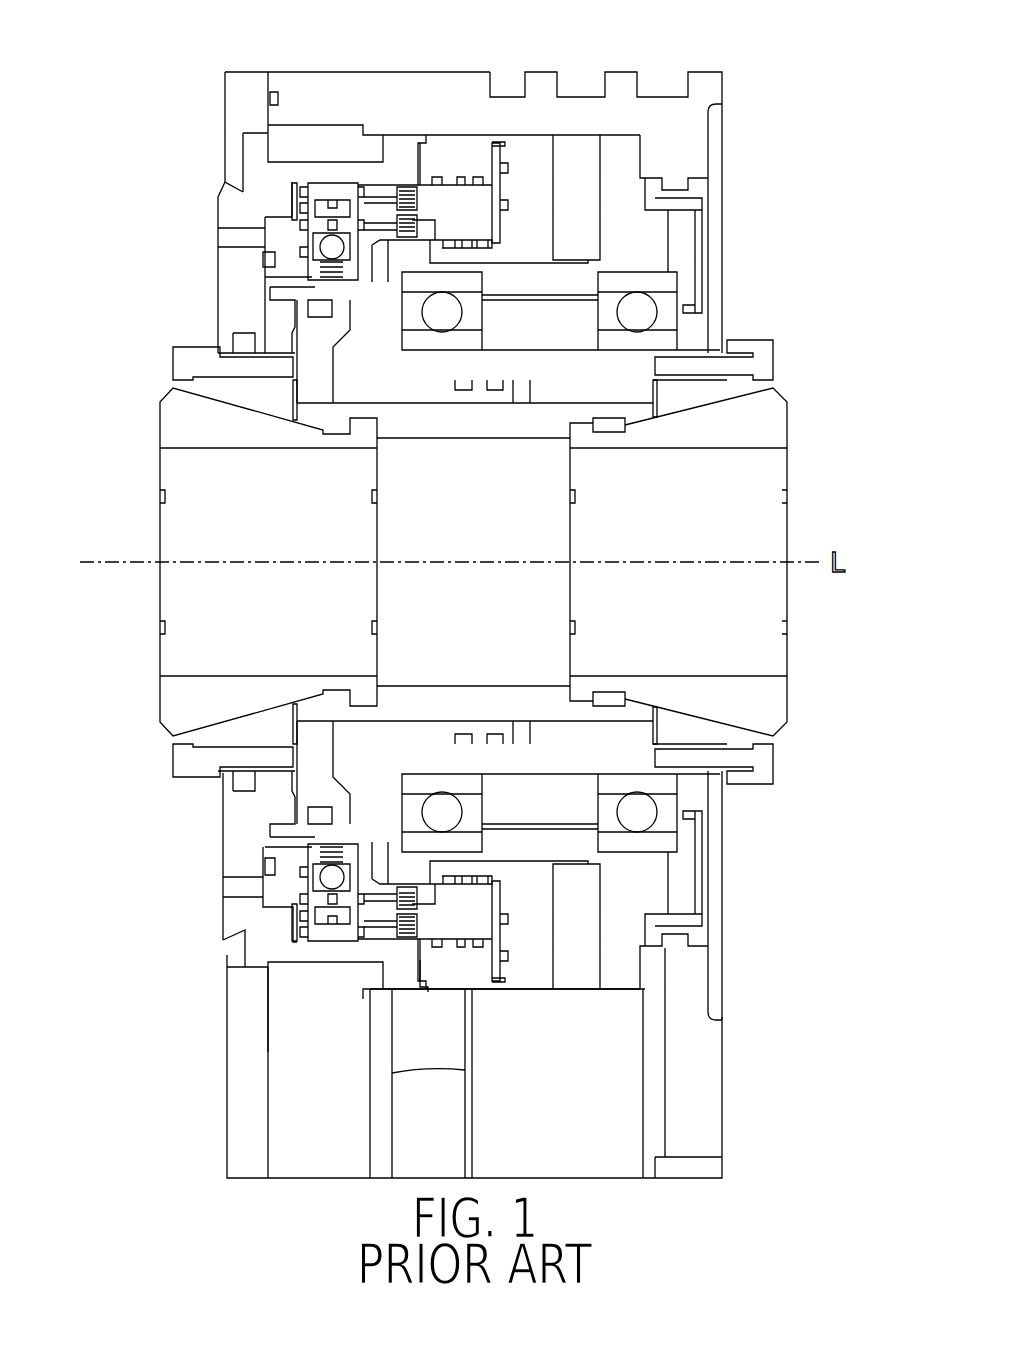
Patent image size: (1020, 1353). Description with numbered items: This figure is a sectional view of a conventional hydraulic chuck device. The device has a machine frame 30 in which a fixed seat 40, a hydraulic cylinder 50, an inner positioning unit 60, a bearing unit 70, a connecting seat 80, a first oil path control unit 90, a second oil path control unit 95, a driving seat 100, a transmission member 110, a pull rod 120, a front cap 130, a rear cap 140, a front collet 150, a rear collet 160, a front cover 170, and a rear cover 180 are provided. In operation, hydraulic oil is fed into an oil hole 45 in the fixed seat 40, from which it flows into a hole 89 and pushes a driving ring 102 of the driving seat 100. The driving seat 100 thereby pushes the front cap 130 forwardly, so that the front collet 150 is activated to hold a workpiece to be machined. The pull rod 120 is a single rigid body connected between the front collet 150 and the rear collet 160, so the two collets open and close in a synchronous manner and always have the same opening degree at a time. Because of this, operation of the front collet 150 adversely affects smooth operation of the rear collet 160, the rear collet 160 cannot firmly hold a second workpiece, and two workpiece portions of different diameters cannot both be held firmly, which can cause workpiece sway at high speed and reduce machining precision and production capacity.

The machine frame 30 is at (712, 62).
The fixed seat 40 is at (623, 130).
The oil hole 45 is at (587, 920).
The hydraulic cylinder 50 is at (425, 183).
The inner positioning unit 60 is at (500, 133).
The bearing unit 70 is at (633, 268).
The connecting seat 80 is at (378, 183).
The hole 89 is at (345, 792).
The first oil path control unit 90 is at (333, 180).
The second oil path control unit 95 is at (318, 945).
The driving seat 100 is at (293, 338).
The driving ring 102 is at (300, 772).
The transmission member 110 is at (222, 205).
The pull rod 120 is at (607, 390).
The front cap 130 is at (172, 345).
The rear cap 140 is at (775, 345).
The front collet 150 is at (160, 420).
The rear collet 160 is at (790, 420).
The front cover 170 is at (222, 102).
The rear cover 180 is at (728, 125).